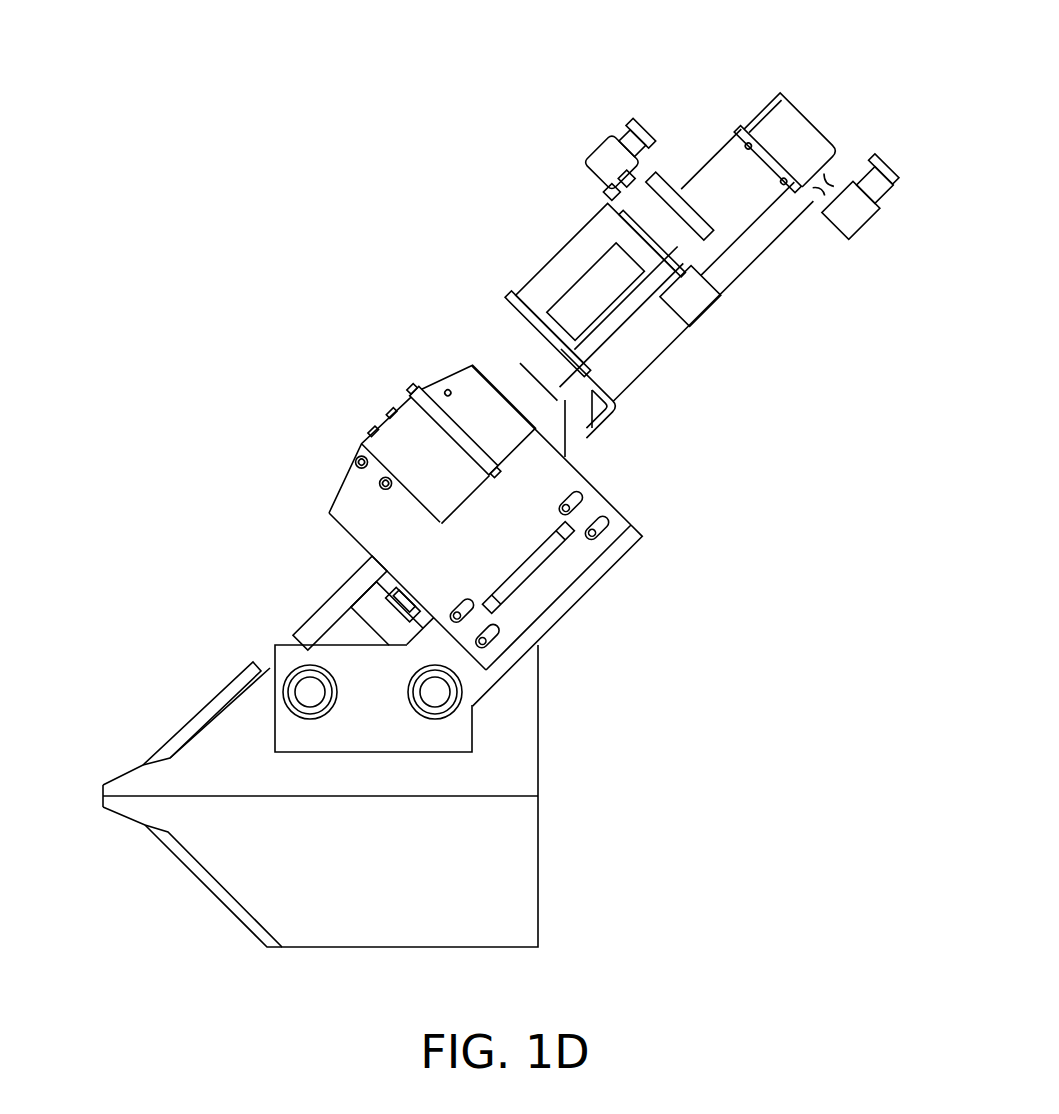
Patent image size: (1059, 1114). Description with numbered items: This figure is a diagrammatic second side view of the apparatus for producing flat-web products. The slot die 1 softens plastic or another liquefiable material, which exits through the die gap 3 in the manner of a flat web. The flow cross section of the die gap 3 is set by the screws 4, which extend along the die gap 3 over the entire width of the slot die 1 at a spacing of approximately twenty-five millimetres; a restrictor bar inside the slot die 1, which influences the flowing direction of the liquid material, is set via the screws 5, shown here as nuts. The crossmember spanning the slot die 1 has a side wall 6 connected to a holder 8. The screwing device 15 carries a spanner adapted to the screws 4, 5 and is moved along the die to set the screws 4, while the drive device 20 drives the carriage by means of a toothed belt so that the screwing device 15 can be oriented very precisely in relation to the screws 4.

The slot die 1 is at (325, 950).
The die gap 3 is at (103, 790).
The screws 4 is at (206, 715).
The screws 5 is at (385, 600).
The side wall 6 is at (560, 578).
The holder 8 is at (363, 736).
The screwing device 15 is at (792, 104).
The drive device 20 is at (588, 282).